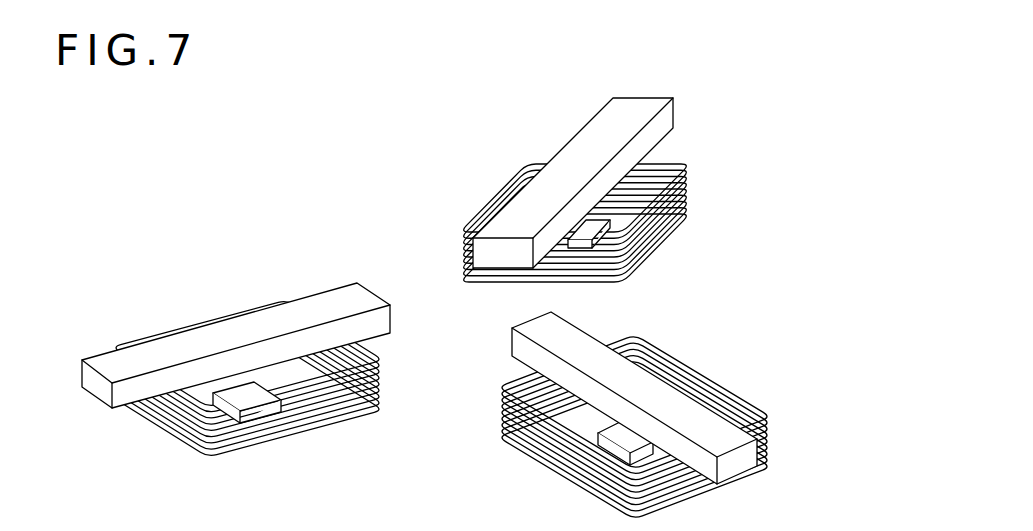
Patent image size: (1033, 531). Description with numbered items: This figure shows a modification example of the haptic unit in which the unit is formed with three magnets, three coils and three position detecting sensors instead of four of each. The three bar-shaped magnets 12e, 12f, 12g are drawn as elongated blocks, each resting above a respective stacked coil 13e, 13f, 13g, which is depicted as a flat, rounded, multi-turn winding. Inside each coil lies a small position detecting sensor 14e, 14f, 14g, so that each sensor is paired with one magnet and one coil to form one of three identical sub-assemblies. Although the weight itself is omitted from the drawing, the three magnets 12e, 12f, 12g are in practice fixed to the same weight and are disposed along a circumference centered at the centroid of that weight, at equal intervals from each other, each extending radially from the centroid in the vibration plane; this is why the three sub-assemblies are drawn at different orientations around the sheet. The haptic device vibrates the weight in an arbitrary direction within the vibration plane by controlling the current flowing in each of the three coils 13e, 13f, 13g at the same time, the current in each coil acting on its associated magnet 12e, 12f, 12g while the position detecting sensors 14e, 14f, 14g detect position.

The magnet 12e is at (634, 107).
The coil 13e is at (690, 190).
The position detecting sensor 14e is at (593, 228).
The magnet 12g is at (205, 337).
The coil 13g is at (300, 437).
The position detecting sensor 14g is at (242, 396).
The magnet 12f is at (667, 400).
The coil 13f is at (775, 440).
The position detecting sensor 14f is at (623, 438).